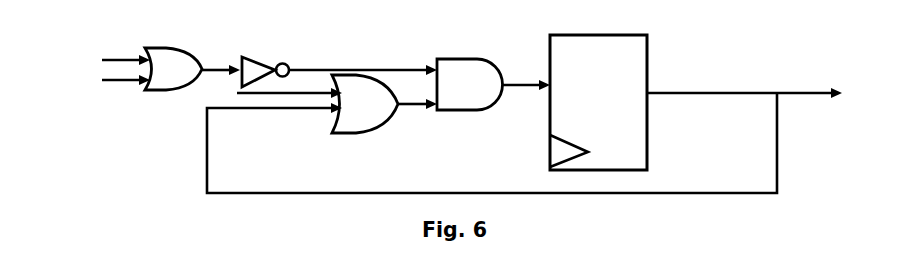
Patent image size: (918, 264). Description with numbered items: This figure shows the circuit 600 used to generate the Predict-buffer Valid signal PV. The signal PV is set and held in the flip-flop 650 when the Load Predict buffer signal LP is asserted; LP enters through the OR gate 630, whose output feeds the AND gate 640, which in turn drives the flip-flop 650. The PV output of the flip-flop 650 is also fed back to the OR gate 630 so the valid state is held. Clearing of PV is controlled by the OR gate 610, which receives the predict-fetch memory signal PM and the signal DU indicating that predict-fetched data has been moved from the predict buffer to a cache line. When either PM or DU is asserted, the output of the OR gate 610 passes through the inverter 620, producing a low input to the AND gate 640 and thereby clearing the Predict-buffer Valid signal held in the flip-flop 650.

The circuit 600 is at (343, 32).
The OR gate 610 is at (192, 69).
The inverter 620 is at (235, 48).
The OR gate 630 is at (384, 104).
The AND gate 640 is at (493, 84).
The flip-flop 650 is at (696, 102).